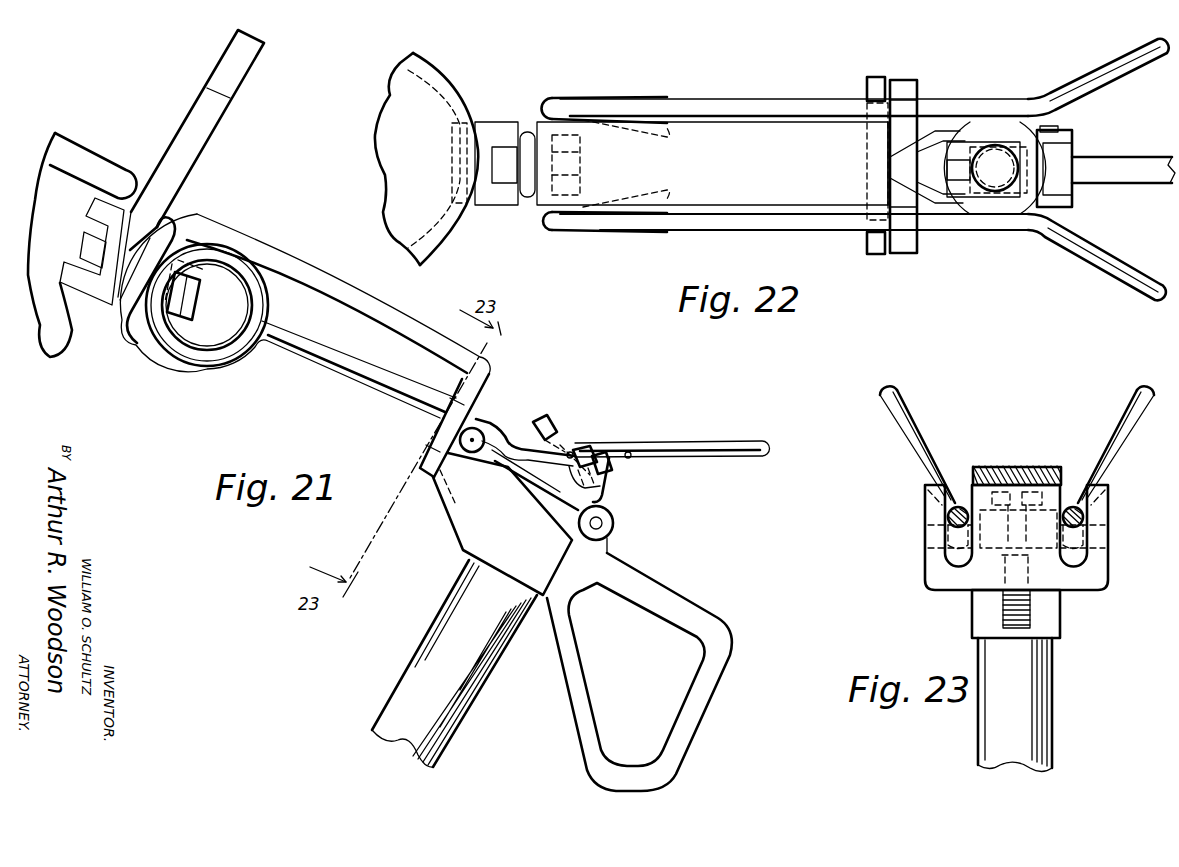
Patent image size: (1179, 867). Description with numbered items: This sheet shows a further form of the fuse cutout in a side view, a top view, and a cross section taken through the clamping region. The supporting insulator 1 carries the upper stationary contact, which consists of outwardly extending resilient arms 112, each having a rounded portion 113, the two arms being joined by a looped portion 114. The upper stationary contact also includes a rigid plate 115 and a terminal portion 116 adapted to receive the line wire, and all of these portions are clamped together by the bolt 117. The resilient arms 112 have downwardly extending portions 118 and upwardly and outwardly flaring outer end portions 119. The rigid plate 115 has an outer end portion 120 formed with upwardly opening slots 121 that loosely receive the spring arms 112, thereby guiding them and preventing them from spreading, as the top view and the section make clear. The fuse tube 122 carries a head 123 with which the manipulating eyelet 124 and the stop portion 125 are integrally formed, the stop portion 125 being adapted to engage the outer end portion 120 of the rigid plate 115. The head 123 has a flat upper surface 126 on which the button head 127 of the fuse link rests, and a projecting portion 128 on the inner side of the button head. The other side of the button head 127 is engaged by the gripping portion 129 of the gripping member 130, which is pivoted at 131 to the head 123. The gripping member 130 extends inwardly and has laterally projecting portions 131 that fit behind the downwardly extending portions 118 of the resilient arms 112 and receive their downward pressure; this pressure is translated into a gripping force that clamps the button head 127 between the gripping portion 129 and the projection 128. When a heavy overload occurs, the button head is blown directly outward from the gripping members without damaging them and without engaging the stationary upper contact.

In FIG. 21, the supporting insulator 1 is at (96, 164).
In FIG. 22, the supporting insulator 1 is at (455, 85).
In FIG. 21, the resilient arms 112 is at (348, 362).
In FIG. 22, the resilient arms 112 is at (762, 98).
In FIG. 23, the resilient arms 112 is at (950, 517).
In FIG. 21, the rounded portion 113 is at (193, 357).
In FIG. 22, the rounded portion 113 is at (590, 112).
In FIG. 21, the looped portion 114 is at (168, 218).
In FIG. 22, the looped portion 114 is at (532, 128).
In FIG. 21, the rigid plate 115 is at (297, 264).
In FIG. 22, the rigid plate 115 is at (700, 140).
In FIG. 23, the rigid plate 115 is at (1012, 465).
In FIG. 21, the terminal portion 116 is at (208, 135).
In FIG. 22, the terminal portion 116 is at (503, 173).
In FIG. 21, the bolt 117 is at (200, 297).
In FIG. 21, the downwardly extending portions 118 is at (493, 427).
In FIG. 21, the outer end portions 119 is at (677, 440).
In FIG. 22, the outer end portions 119 is at (1127, 73).
In FIG. 23, the outer end portions 119 is at (913, 418).
In FIG. 21, the outer end portion 120 is at (443, 435).
In FIG. 22, the outer end portion 120 is at (863, 167).
In FIG. 23, the outer end portion 120 is at (1092, 583).
In FIG. 22, the upwardly opening slots 121 is at (878, 93).
In FIG. 23, the upwardly opening slots 121 is at (943, 540).
In FIG. 21, the fuse tube 122 is at (402, 665).
In FIG. 23, the fuse tube 122 is at (1053, 733).
In FIG. 21, the head 123 is at (472, 551).
In FIG. 23, the head 123 is at (972, 613).
In FIG. 21, the manipulating eyelet 124 is at (650, 612).
In FIG. 22, the manipulating eyelet 124 is at (1143, 183).
In FIG. 21, the stop portion 125 is at (447, 497).
In FIG. 23, the stop portion 125 is at (1032, 610).
In FIG. 21, the flat upper surface 126 is at (593, 481).
In FIG. 21, the button head 127 is at (580, 450).
In FIG. 22, the button head 127 is at (993, 180).
In FIG. 21, the projecting portion 128 is at (543, 421).
In FIG. 22, the projecting portion 128 is at (958, 163).
In FIG. 21, the gripping portion 129 is at (612, 452).
In FIG. 22, the gripping portion 129 is at (1027, 157).
In FIG. 21, the gripping member 130 is at (557, 473).
In FIG. 22, the gripping member 130 is at (953, 203).
In FIG. 21, the laterally projecting portions 131 is at (470, 452).
In FIG. 22, the laterally projecting portions 131 is at (903, 80).